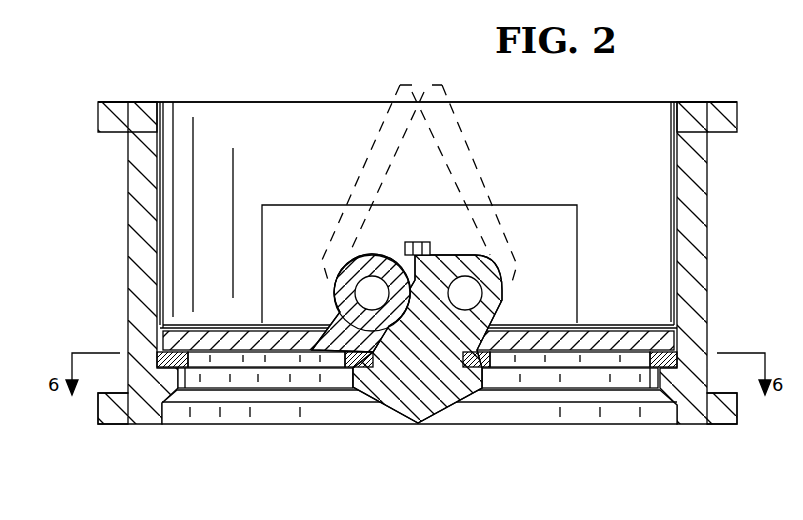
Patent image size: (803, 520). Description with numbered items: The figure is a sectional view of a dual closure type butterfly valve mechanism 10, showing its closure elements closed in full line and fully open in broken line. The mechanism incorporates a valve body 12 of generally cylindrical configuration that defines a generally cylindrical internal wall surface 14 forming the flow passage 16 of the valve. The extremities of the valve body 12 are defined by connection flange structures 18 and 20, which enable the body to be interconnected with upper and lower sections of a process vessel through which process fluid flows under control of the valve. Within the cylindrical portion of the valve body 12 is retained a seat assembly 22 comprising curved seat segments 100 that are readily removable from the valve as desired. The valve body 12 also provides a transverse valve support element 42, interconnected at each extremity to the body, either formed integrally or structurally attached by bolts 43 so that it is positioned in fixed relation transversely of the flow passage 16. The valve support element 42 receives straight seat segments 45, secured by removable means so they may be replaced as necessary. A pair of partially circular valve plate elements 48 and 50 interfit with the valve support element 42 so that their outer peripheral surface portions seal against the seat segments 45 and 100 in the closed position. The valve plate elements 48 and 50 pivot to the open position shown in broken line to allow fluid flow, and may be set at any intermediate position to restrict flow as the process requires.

The dual closure type butterfly valve mechanism 10 is at (280, 62).
The valve body 12 is at (707, 203).
The internal wall surface 14 is at (157, 153).
The flow passage 16 is at (177, 115).
The connection flange structure 18 is at (707, 102).
The connection flange structure 20 is at (717, 424).
The seat assembly 22 is at (192, 283).
The valve support element 42 is at (440, 415).
The bolts 43 is at (413, 242).
The straight seat segment 45 is at (338, 352).
The valve plate element 48 is at (280, 353).
The valve plate element 50 is at (562, 350).
The seat segments 100 is at (218, 360).